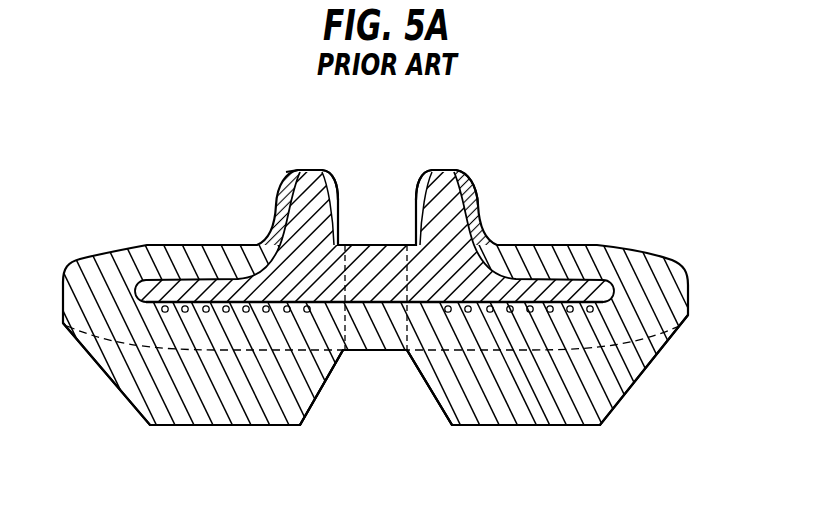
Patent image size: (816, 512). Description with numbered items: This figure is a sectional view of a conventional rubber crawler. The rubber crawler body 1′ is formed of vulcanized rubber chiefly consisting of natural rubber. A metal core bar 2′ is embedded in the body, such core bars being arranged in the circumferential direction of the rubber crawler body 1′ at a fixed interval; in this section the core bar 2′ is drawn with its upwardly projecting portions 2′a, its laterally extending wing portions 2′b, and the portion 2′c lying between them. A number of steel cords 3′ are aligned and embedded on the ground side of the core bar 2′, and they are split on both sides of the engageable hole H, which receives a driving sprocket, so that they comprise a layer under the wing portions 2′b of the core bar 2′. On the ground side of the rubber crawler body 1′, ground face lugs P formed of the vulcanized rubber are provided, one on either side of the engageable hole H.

The rubber crawler body 1′ is at (688, 300).
The metal core bar 2′ is at (465, 252).
The tooth tip 2′a is at (305, 199).
The wing portion 2′b is at (178, 281).
The land between teeth 2′c is at (387, 245).
The steel cord 3′ is at (246, 313).
The ground face lug P is at (173, 413).
The engageable hole H is at (365, 352).